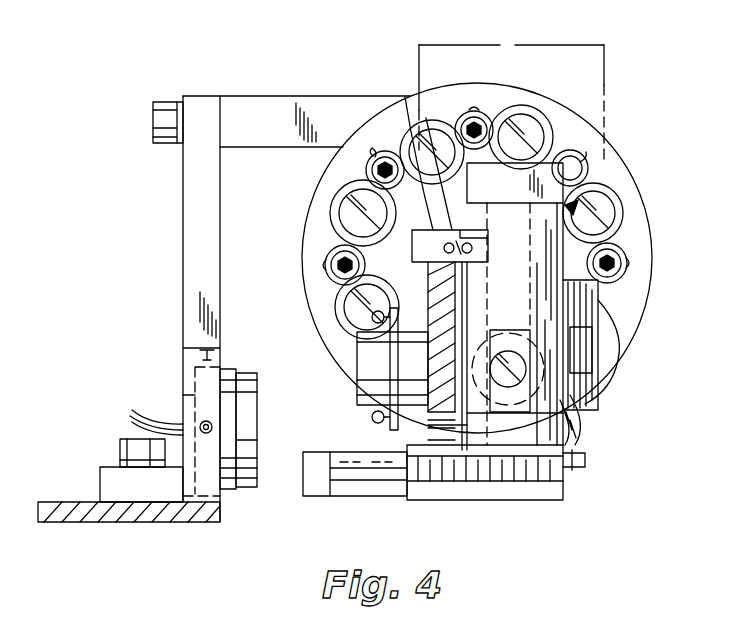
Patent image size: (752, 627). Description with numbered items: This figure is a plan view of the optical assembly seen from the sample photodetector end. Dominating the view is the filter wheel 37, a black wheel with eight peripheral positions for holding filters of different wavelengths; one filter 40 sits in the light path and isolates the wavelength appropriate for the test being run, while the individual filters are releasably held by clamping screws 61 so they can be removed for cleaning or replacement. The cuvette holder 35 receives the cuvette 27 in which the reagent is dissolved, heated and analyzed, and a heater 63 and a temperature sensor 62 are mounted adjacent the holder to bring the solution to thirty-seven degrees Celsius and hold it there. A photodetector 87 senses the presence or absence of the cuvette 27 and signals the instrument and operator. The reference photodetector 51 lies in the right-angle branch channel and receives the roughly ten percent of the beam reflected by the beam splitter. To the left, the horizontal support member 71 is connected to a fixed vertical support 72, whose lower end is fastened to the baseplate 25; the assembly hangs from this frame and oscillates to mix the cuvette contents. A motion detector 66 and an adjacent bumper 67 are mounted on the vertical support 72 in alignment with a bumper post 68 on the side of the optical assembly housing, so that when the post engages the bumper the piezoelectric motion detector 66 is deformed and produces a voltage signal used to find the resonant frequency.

The baseplate 25 is at (105, 524).
The cuvette 27 is at (604, 80).
The cuvette holder 35 is at (568, 211).
The filter wheel 37 is at (629, 168).
The filter 40 is at (518, 363).
The reference photodetector 51 is at (324, 343).
The clamping screws 61 is at (627, 252).
The temperature sensor 62 is at (615, 372).
The heater 63 is at (586, 404).
The motion detector 66 is at (231, 498).
The bumper 67 is at (258, 401).
The bumper post 68 is at (316, 498).
The horizontal support member 71 is at (284, 96).
The fixed vertical support 72 is at (192, 236).
The photodetector 87 is at (432, 237).